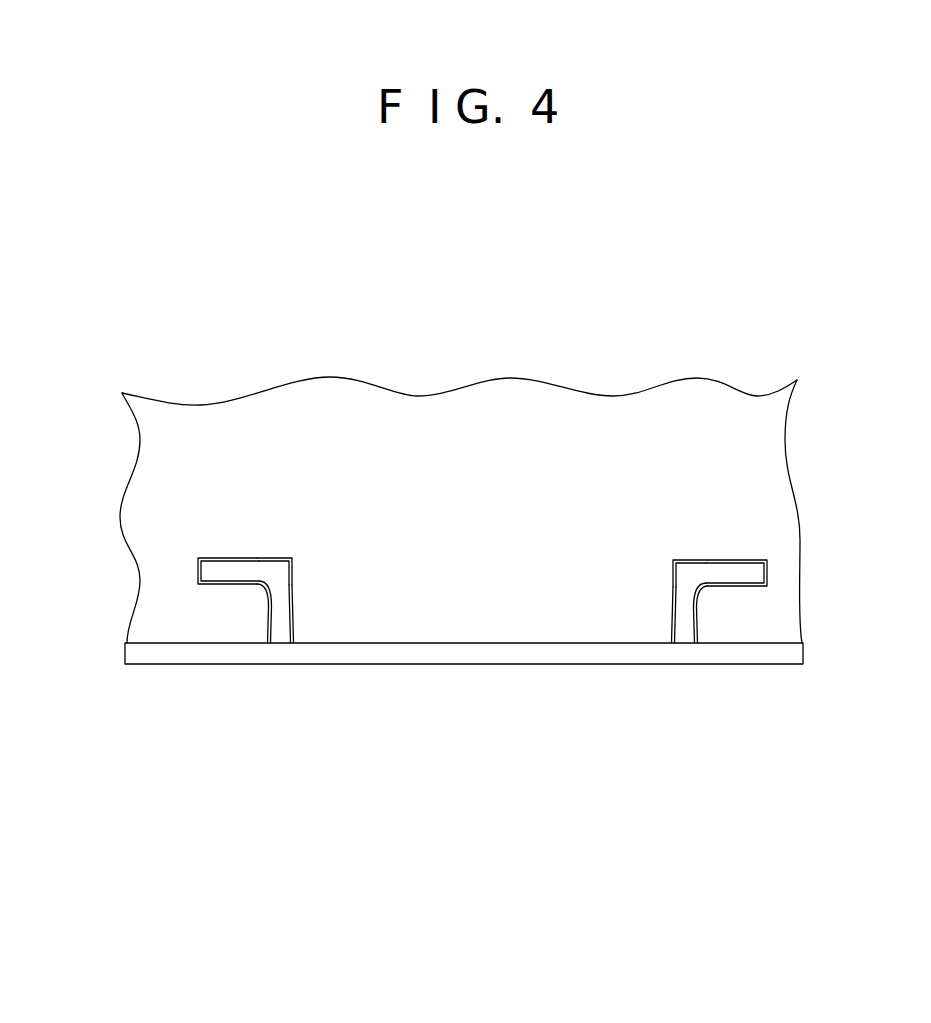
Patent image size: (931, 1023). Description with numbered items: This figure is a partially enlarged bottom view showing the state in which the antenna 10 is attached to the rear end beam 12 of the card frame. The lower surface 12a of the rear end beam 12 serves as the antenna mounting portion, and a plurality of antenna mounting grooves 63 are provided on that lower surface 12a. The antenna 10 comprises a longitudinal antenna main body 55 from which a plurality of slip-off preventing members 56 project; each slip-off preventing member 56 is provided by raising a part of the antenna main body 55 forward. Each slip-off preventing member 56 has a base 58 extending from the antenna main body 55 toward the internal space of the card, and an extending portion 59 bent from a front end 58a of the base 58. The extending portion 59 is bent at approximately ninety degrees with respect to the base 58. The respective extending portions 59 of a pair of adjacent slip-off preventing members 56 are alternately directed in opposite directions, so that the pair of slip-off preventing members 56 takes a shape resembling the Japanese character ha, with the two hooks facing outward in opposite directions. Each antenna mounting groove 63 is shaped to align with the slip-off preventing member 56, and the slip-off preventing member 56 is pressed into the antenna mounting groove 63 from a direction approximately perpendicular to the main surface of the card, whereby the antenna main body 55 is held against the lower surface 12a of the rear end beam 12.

The antenna 10 is at (532, 730).
The rear end beam 12 is at (430, 413).
The lower surface 12a is at (572, 402).
The antenna main body 55 is at (477, 658).
The slip-off preventing member 56 is at (273, 607).
The base 58 is at (287, 622).
The front end 58a is at (274, 578).
The extending portion 59 is at (217, 567).
The antenna mounting groove 63 is at (276, 557).